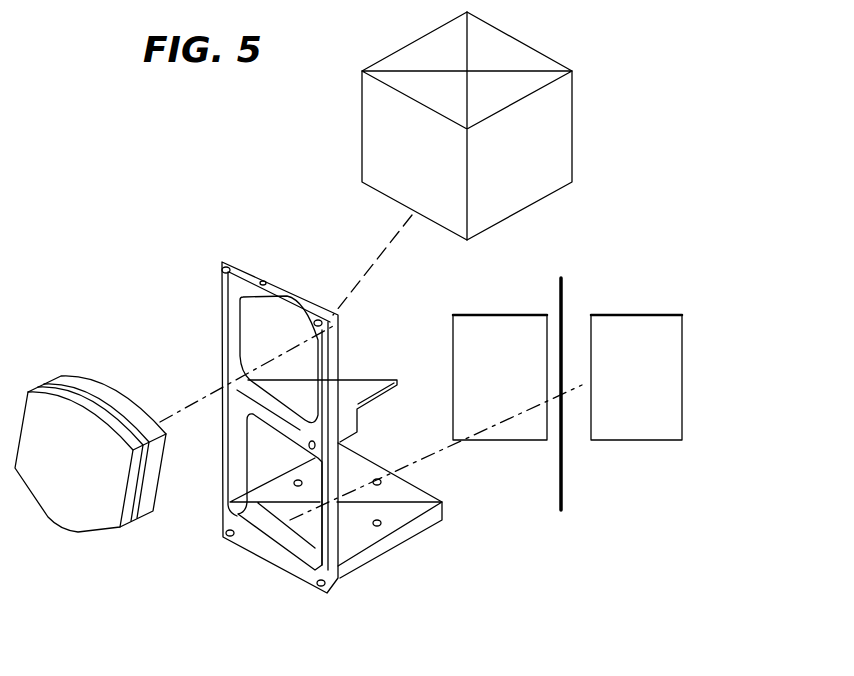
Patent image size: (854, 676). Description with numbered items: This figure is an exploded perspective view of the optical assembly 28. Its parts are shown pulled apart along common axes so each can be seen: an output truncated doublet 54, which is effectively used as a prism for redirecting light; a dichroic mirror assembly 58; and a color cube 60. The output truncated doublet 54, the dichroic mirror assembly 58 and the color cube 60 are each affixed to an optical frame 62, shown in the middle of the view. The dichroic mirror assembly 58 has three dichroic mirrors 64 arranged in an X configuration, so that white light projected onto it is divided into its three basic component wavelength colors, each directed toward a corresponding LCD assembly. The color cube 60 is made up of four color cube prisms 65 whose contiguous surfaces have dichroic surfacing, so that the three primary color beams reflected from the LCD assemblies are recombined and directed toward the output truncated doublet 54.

The optical assembly 28 is at (162, 289).
The output truncated doublet 54 is at (97, 513).
The dichroic mirror assembly 58 is at (567, 364).
The color cube 60 is at (497, 126).
The optical frame 62 is at (398, 537).
The dichroic mirror 64 is at (520, 430).
The color cube prism 65 is at (456, 64).